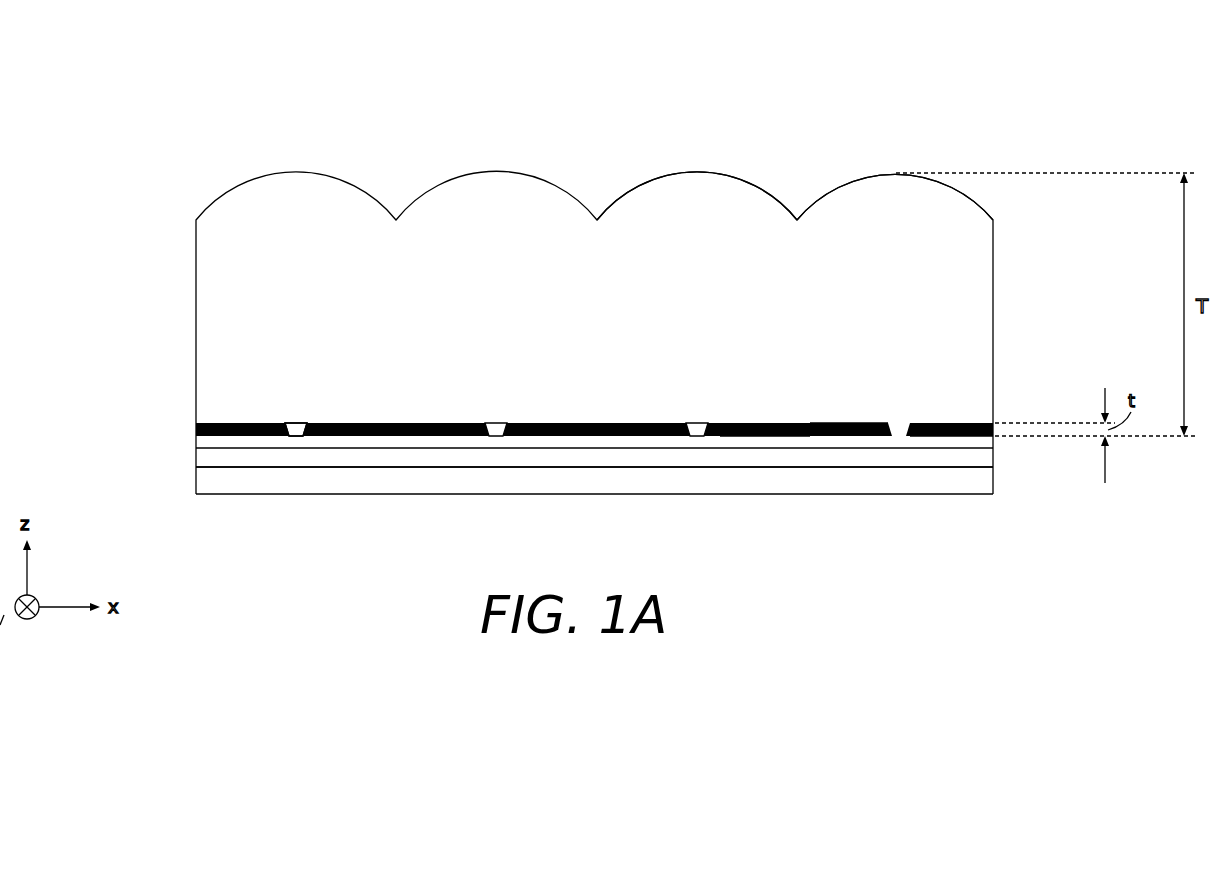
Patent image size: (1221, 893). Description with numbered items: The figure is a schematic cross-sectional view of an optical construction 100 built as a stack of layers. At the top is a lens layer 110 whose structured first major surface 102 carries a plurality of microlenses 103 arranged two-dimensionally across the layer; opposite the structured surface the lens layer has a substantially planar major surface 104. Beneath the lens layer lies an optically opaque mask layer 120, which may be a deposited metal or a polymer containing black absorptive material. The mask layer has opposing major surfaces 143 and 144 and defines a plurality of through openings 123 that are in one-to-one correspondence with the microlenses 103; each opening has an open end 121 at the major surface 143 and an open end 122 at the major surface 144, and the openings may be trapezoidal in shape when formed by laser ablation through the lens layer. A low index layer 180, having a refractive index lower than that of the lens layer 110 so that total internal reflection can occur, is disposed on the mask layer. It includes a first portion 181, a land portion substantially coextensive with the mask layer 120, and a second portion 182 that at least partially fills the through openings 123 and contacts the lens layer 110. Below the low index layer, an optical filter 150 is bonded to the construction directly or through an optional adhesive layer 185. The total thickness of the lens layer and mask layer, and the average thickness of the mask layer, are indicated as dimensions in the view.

The optical construction 100 is at (198, 104).
The lens layer 110 is at (215, 197).
The structured first major surface 102 is at (697, 172).
The microlenses 103 is at (872, 172).
The mask layer 120 is at (196, 428).
The open ends 121 is at (296, 423).
The open ends 122 is at (296, 437).
The through openings 123 is at (497, 428).
The low index layer 180 is at (192, 443).
The first portion 181 is at (235, 442).
The second portion 182 is at (697, 430).
The adhesive layer 185 is at (983, 457).
The major surface 143 is at (850, 423).
The major surface 144 is at (933, 437).
The major surface 104 is at (766, 424).
The optical filter 150 is at (983, 482).